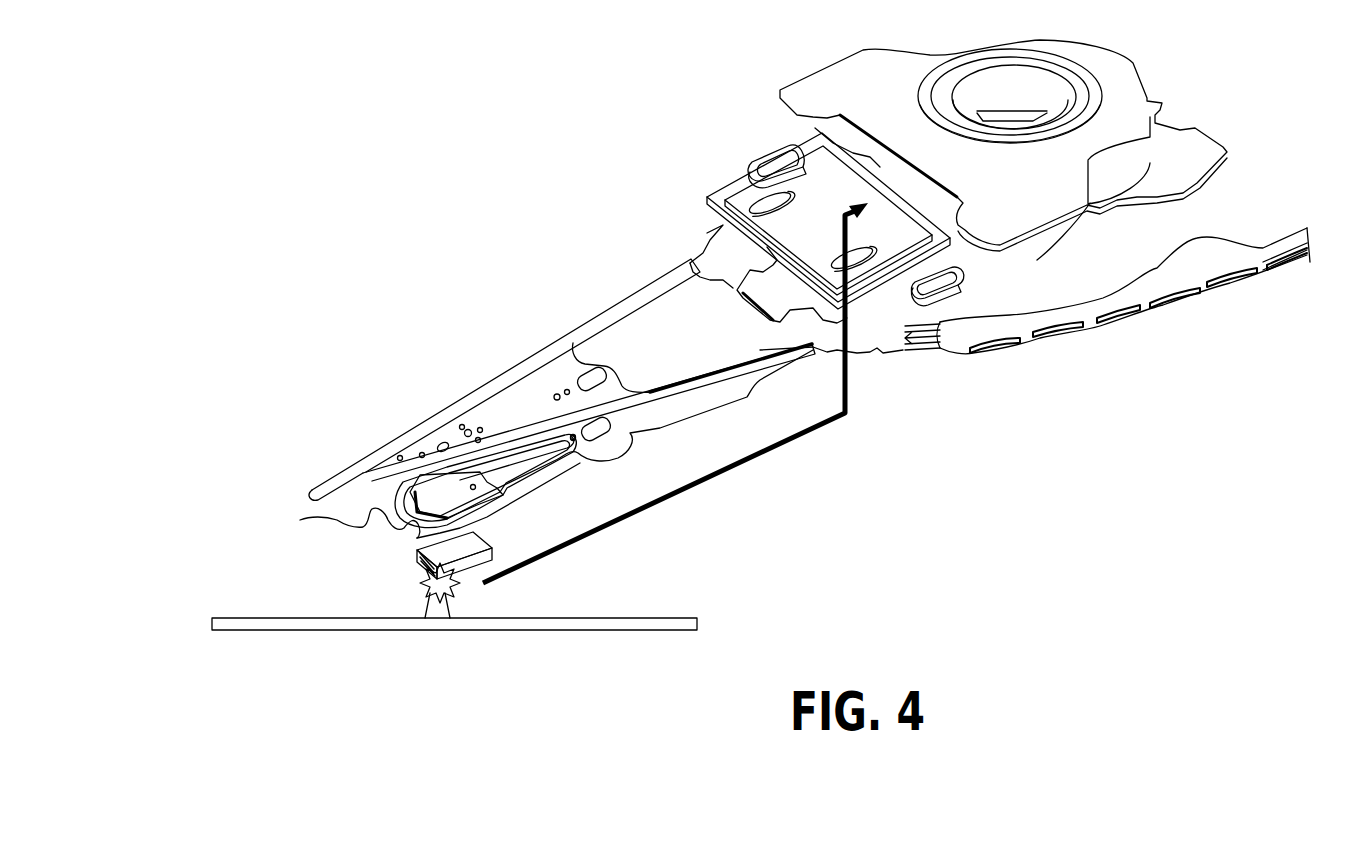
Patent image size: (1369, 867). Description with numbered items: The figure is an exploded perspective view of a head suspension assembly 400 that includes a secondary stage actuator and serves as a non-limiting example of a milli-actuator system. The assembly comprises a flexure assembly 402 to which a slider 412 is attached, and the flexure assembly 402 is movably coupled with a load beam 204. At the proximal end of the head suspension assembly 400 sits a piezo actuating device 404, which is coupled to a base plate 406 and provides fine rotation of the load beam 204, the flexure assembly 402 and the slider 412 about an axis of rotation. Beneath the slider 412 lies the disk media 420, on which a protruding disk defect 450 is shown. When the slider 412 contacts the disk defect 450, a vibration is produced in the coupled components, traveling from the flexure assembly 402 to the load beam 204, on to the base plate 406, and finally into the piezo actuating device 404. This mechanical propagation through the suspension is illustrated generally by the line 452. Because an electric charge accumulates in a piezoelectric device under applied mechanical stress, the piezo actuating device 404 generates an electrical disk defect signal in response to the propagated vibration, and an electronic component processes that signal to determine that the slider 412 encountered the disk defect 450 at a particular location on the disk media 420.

The head suspension assembly 400 is at (436, 176).
The load beam 204 is at (513, 396).
The flexure assembly 402 is at (370, 510).
The piezo actuating device 404 is at (882, 230).
The base plate 406 is at (907, 273).
The slider 412 is at (420, 568).
The disk media 420 is at (702, 623).
The disk defect 450 is at (450, 606).
The line of mechanical propagation 452 is at (690, 490).